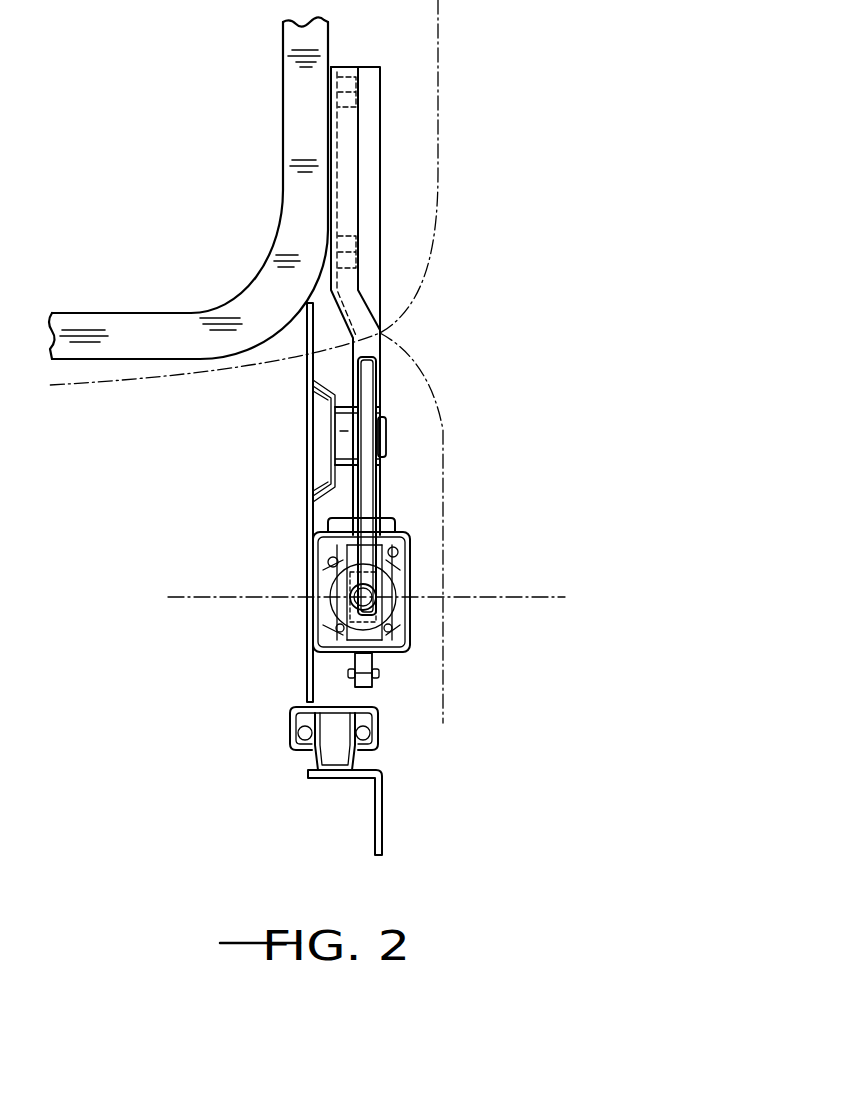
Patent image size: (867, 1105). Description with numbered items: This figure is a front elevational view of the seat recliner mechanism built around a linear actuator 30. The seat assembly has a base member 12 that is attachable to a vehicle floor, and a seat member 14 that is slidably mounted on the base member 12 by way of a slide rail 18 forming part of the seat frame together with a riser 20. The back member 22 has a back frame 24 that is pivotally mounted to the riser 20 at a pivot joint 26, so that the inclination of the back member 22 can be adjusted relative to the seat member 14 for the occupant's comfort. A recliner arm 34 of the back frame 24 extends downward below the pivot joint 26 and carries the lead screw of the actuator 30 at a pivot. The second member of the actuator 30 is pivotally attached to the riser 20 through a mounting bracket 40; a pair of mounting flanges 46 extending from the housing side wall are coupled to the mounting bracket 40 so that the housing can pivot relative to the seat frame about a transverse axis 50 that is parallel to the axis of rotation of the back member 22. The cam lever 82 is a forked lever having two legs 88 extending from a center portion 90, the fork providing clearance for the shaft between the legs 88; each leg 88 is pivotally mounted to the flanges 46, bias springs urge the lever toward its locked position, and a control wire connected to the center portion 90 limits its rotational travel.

The base member 12 is at (357, 752).
The seat member 14 is at (445, 455).
The slide rail 18 is at (290, 707).
The riser 20 is at (307, 512).
The back member 22 is at (440, 140).
The back frame 24 is at (382, 118).
The pivot joint 26 is at (380, 418).
The linear actuator 30 is at (428, 622).
The recliner arm 34 is at (380, 477).
The mounting bracket 40 is at (415, 567).
The mounting flanges 46 is at (340, 625).
The transverse axis 50 is at (207, 597).
The cam lever 82 is at (355, 655).
The legs 88 is at (330, 563).
The center portion 90 is at (375, 668).